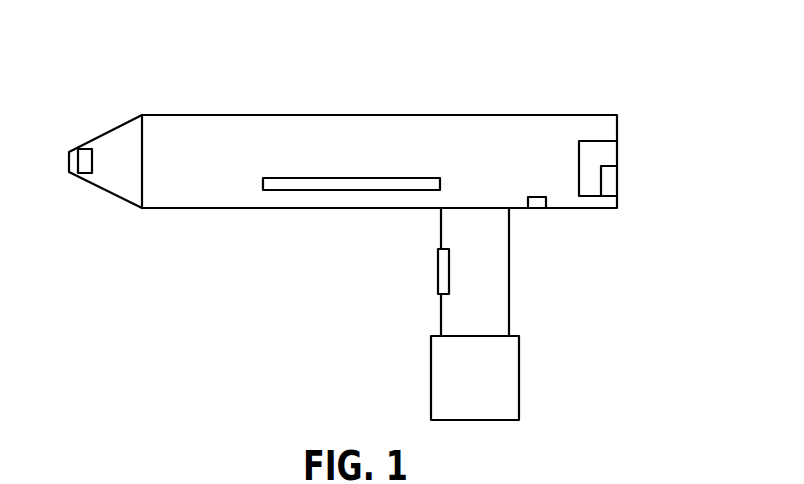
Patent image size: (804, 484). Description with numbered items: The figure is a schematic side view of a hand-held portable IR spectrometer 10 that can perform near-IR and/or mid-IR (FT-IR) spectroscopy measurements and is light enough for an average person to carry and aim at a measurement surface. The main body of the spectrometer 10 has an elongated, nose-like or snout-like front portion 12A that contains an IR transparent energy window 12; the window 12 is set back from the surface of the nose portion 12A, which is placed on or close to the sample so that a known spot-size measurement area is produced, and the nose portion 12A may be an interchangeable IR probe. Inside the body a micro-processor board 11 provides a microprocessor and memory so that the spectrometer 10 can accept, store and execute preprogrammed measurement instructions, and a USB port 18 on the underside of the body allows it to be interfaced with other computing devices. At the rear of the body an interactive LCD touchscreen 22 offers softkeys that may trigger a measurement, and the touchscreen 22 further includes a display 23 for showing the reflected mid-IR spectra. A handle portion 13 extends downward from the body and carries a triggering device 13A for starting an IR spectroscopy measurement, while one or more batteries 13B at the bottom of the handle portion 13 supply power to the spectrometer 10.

The portable IR spectrometer 10 is at (336, 90).
The elongated front portion 12A is at (108, 130).
The IR transparent energy window 12 is at (93, 160).
The micro-processor board 11 is at (302, 183).
The interactive LCD touchscreen 22 is at (597, 153).
The display 23 is at (606, 181).
The USB port 18 is at (537, 205).
The handle portion 13 is at (489, 273).
The triggering device 13A is at (447, 271).
The battery 13B is at (503, 377).